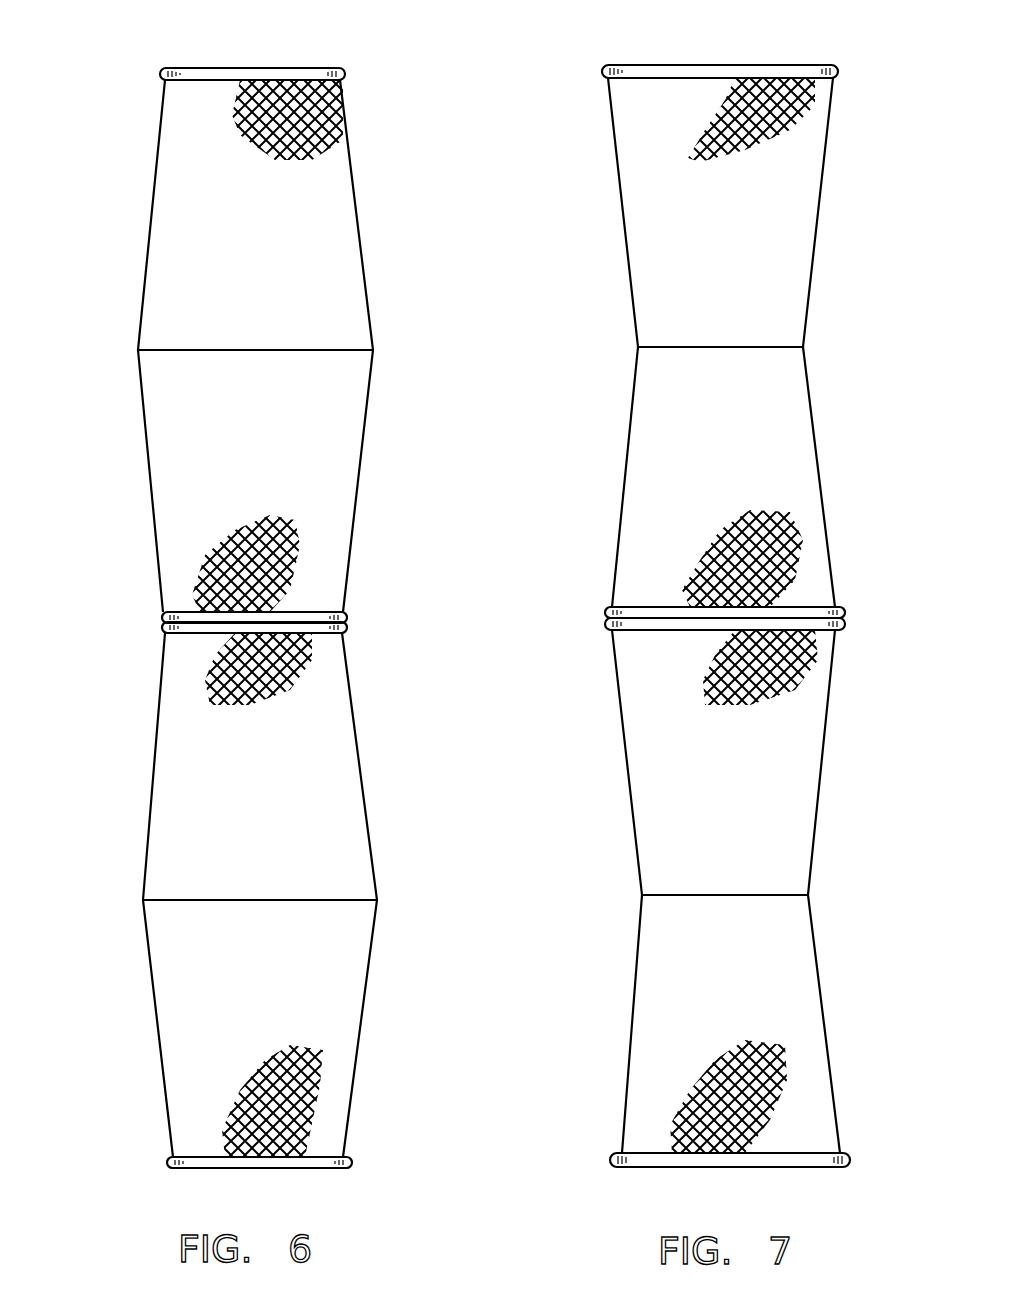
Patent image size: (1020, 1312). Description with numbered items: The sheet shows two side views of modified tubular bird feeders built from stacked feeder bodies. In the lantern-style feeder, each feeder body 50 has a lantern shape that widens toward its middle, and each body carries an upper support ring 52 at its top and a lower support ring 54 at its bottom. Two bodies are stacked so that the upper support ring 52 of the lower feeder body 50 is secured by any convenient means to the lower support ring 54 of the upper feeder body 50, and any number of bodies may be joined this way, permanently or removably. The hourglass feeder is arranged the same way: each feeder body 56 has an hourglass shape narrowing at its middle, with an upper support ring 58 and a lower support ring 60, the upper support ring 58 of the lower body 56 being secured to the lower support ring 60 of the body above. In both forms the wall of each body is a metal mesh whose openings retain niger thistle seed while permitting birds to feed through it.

In FIG. 6, the feeder body 50 is at (110, 333).
In FIG. 6, the upper support ring 52 is at (280, 68).
In FIG. 6, the lower support ring 54 is at (310, 612).
In FIG. 7, the feeder body 56 is at (590, 330).
In FIG. 7, the upper support ring 58 is at (602, 70).
In FIG. 7, the lower support ring 60 is at (605, 612).